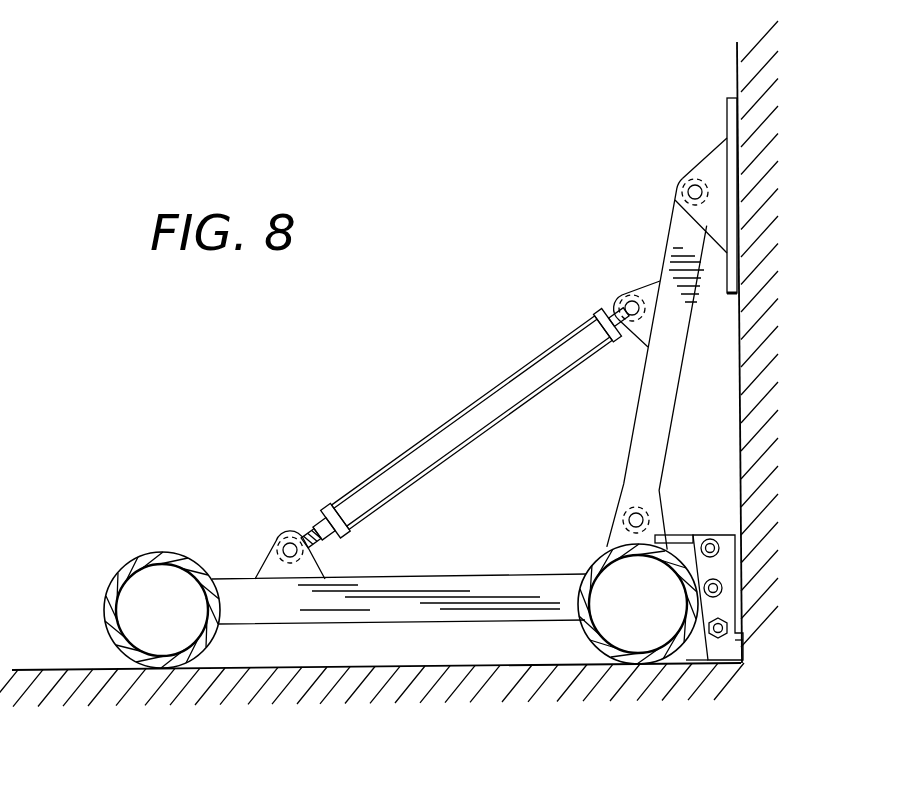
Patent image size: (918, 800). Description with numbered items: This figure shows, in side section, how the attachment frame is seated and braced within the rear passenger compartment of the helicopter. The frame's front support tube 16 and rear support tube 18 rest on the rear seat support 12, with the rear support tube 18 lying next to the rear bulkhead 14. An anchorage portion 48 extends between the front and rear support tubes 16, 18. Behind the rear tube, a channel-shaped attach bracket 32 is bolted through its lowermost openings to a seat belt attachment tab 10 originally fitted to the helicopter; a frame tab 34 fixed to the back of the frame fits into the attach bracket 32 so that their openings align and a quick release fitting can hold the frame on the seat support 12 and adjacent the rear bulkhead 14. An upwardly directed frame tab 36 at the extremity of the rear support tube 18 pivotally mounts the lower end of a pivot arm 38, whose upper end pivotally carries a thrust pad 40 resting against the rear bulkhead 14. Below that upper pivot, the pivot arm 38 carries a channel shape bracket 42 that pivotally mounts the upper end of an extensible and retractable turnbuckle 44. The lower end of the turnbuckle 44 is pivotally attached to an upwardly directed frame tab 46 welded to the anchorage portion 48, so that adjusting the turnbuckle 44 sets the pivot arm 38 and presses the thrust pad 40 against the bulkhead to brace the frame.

The seat belt attachment tab 10 is at (742, 640).
The rear seat support 12 is at (57, 669).
The rear bulkhead 14 is at (737, 62).
The front support tube 16 is at (168, 553).
The rear support tube 18 is at (598, 565).
The attach bracket 32 is at (710, 533).
The frame tab 34 is at (677, 536).
The frame tab 36 is at (614, 540).
The pivot arm 38 is at (673, 221).
The thrust pad 40 is at (727, 113).
The channel shape bracket 42 is at (640, 291).
The turnbuckle 44 is at (489, 396).
The frame tab 46 is at (318, 573).
The anchorage portion 48 is at (451, 578).